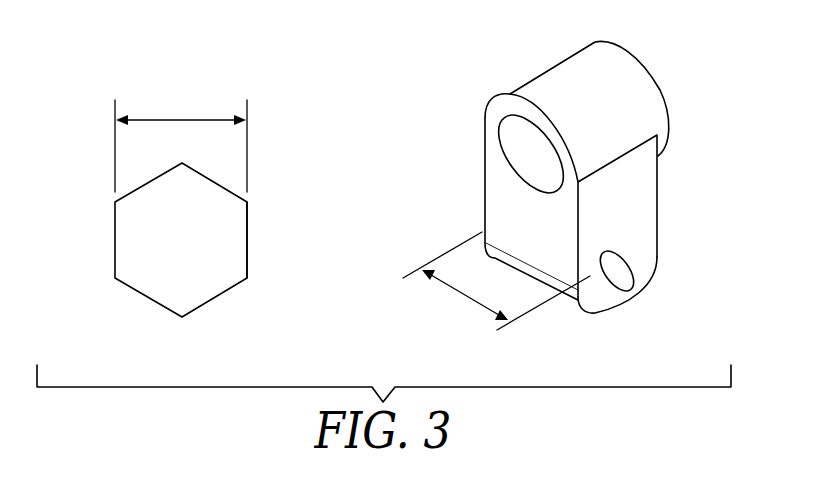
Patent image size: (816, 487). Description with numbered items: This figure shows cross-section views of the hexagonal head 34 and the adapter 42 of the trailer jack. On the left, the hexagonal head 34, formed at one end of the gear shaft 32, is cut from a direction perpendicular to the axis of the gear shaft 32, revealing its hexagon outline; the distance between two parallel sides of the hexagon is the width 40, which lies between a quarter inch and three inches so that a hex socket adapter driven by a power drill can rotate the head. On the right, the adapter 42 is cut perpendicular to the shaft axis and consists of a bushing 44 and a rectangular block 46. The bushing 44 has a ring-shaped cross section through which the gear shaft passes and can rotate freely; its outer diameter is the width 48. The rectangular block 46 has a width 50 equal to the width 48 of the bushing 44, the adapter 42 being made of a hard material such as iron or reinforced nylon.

The gear shaft 32 is at (126, 312).
The hexagonal head 34 is at (224, 242).
The width of hexagonal head 40 is at (182, 120).
The adapter 42 is at (485, 43).
The bushing 44 is at (497, 118).
The rectangular block 46 is at (642, 227).
The width of bushing 48 is at (474, 283).
The width of rectangular block 50 is at (467, 296).